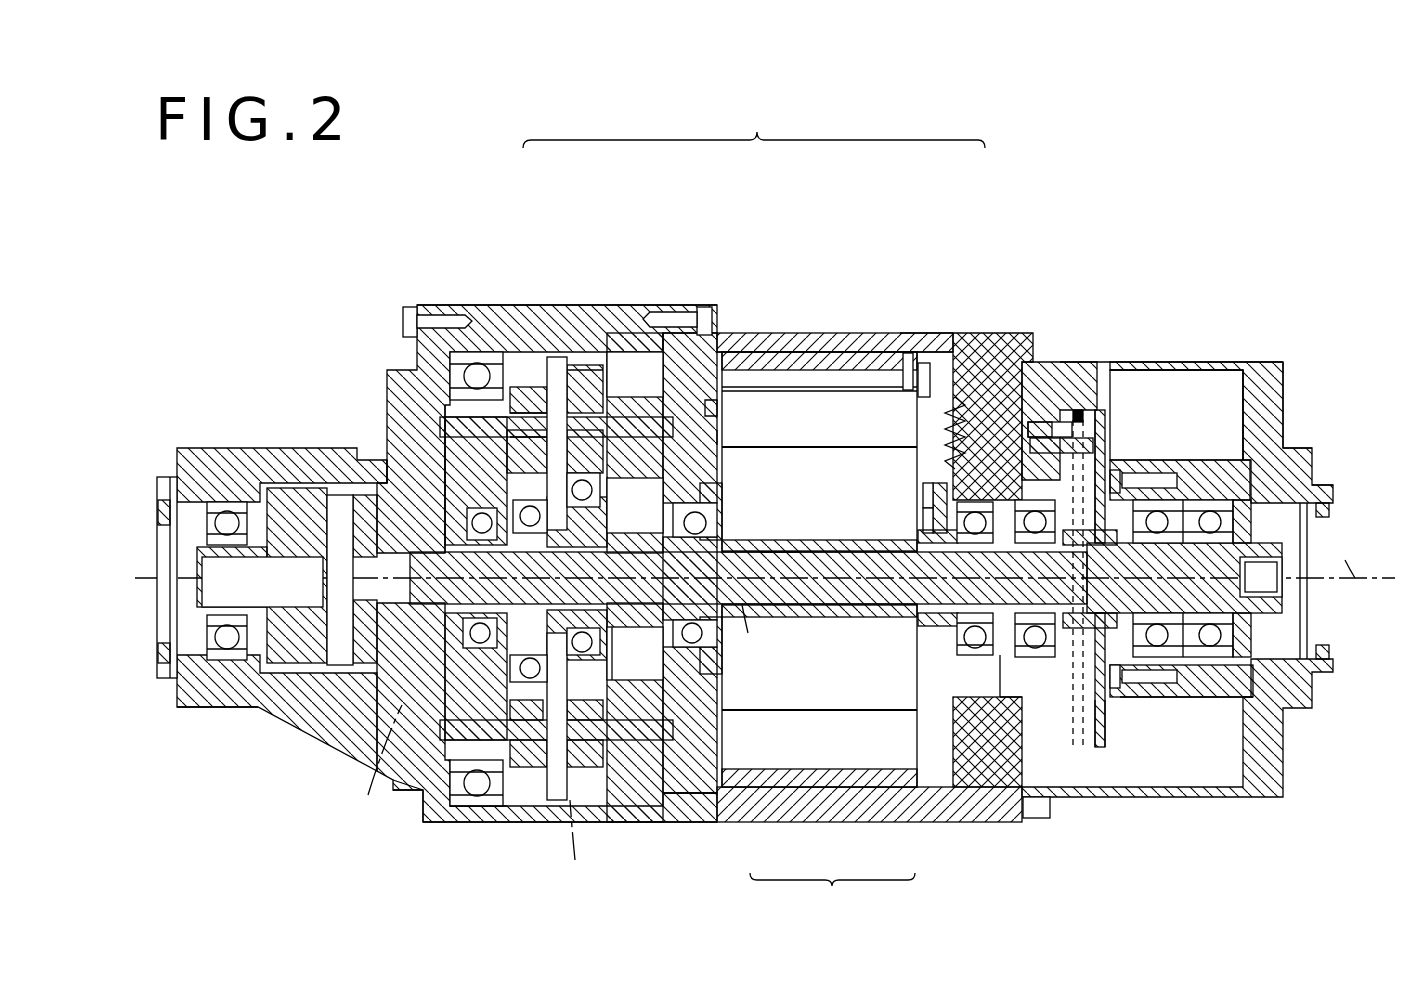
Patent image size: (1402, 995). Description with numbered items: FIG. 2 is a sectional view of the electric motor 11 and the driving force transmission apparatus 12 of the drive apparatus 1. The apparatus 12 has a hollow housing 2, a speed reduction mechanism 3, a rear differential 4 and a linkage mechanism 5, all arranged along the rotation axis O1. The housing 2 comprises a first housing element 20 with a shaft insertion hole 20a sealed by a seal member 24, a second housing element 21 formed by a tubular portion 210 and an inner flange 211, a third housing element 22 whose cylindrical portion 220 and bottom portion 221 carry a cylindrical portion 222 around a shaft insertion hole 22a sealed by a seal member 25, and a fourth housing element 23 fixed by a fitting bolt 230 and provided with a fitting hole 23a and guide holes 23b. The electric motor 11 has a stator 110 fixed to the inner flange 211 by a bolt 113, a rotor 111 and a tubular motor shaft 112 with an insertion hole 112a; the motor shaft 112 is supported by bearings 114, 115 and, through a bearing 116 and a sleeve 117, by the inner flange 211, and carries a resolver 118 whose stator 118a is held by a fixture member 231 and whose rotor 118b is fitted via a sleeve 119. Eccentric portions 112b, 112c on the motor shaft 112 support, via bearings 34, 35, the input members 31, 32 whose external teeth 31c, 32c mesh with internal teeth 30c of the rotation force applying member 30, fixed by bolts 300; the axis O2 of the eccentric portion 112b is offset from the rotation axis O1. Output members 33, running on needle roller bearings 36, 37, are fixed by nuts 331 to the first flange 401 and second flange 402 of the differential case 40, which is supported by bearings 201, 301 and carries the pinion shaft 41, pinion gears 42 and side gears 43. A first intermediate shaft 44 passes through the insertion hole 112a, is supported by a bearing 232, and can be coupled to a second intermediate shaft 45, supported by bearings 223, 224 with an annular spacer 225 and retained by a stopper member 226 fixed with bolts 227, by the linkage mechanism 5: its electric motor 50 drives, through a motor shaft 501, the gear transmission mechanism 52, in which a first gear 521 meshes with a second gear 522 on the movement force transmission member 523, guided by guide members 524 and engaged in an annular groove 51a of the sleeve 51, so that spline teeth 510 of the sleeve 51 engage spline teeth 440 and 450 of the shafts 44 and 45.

The drive apparatus 1 is at (372, 287).
The housing 2 is at (754, 126).
The speed reduction mechanism 3 is at (558, 845).
The rear differential 4 is at (230, 452).
The linkage mechanism 5 is at (1145, 504).
The electric motor 11 is at (819, 631).
The driving force transmission apparatus 12 is at (1034, 263).
The first housing element 20 is at (436, 300).
The shaft insertion hole 20a is at (163, 505).
The second housing element 21 is at (830, 328).
The third housing element 22 is at (1022, 331).
The shaft insertion hole 22a is at (1325, 508).
The fourth housing element 23 is at (982, 328).
The fitting hole 23a is at (925, 365).
The guide holes 23b is at (987, 700).
The seal member 24 is at (162, 653).
The seal member 25 is at (1323, 651).
The rotation force applying member 30 is at (610, 313).
The internal teeth 30c is at (523, 392).
The input member 31 is at (555, 812).
The external teeth 31c is at (475, 352).
The input member 32 is at (600, 770).
The external teeth 32c is at (590, 370).
The output members 33 is at (680, 350).
The bearing 34 is at (433, 440).
The bearing 35 is at (626, 427).
The needle roller bearing 36 is at (525, 400).
The needle roller bearing 37 is at (583, 390).
The differential case 40 is at (262, 612).
The pinion shaft 41 is at (338, 667).
The pinion gears 42 is at (294, 483).
The side gears 43 is at (237, 500).
The first intermediate shaft 44 is at (863, 620).
The second intermediate shaft 45 is at (1205, 666).
The electric motor 50 is at (1024, 400).
The sleeve 51 is at (1100, 520).
The annular groove 51a is at (1083, 397).
The gear transmission mechanism 52 is at (1125, 460).
The stator 110 is at (817, 800).
The rotor 111 is at (843, 722).
The motor shaft 112 is at (877, 630).
The insertion hole 112a is at (765, 552).
The eccentric portion 112b is at (523, 792).
The eccentric portion 112c is at (540, 440).
The bolt 113 is at (908, 353).
The bearing 114 is at (428, 800).
The bearing 115 is at (957, 700).
The bearing 116 is at (720, 509).
The sleeve 117 is at (628, 538).
The resolver 118 is at (920, 478).
The stator 118a is at (921, 488).
The rotor 118b is at (922, 508).
The sleeve 119 is at (912, 537).
The bearing 201 is at (193, 700).
The tubular portion 210 is at (860, 345).
The inner flange 211 is at (708, 434).
The cylindrical portion 220 is at (1182, 395).
The bottom portion 221 is at (1275, 400).
The cylindrical portion 222 is at (1290, 456).
The bearing 223 is at (1275, 598).
The bearing 224 is at (1302, 481).
The annular spacer 225 is at (1268, 385).
The stopper member 226 is at (1205, 452).
The bolts 227 is at (1116, 490).
The fitting bolt 230 is at (1040, 819).
The fixture member 231 is at (947, 423).
The bearing 232 is at (1008, 700).
The bolts 300 is at (402, 320).
The bearing 301 is at (478, 823).
The nut 331 is at (445, 440).
The first flange 401 is at (410, 800).
The second flange 402 is at (670, 808).
The spline teeth 440 is at (1100, 708).
The spline teeth 450 is at (1167, 698).
The motor shaft 501 is at (1040, 422).
The spline teeth 510 is at (1140, 698).
The first gear 521 is at (1133, 398).
The second gear 522 is at (1183, 396).
The movement force transmission member 523 is at (1200, 398).
The guide members 524 is at (1062, 697).
The rotation axis O1 is at (1357, 551).
The axis O2 is at (580, 839).